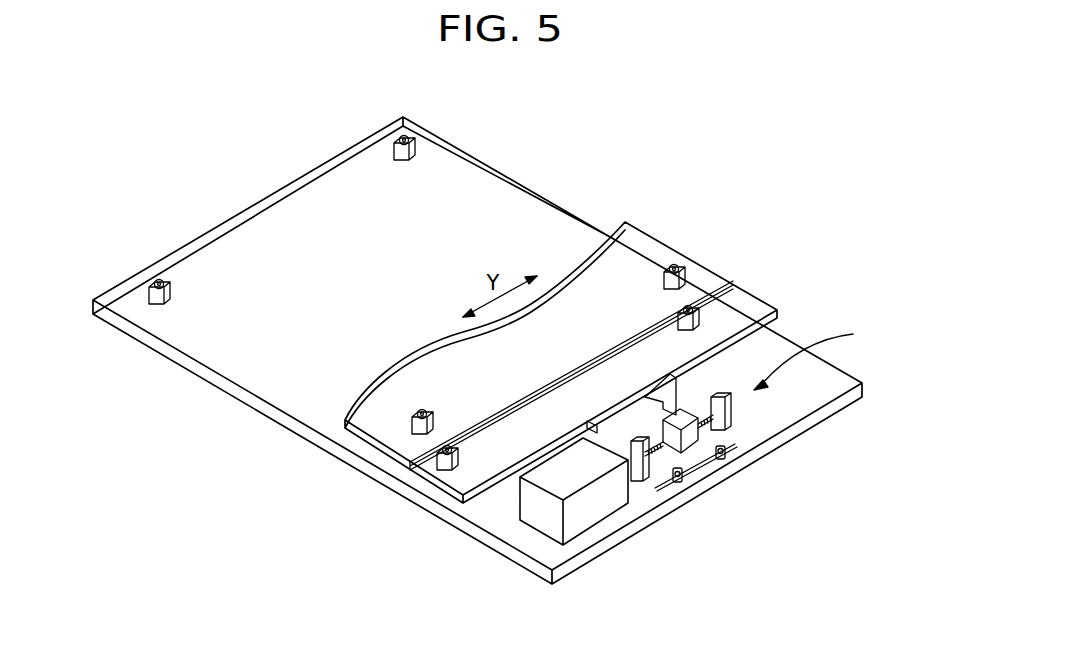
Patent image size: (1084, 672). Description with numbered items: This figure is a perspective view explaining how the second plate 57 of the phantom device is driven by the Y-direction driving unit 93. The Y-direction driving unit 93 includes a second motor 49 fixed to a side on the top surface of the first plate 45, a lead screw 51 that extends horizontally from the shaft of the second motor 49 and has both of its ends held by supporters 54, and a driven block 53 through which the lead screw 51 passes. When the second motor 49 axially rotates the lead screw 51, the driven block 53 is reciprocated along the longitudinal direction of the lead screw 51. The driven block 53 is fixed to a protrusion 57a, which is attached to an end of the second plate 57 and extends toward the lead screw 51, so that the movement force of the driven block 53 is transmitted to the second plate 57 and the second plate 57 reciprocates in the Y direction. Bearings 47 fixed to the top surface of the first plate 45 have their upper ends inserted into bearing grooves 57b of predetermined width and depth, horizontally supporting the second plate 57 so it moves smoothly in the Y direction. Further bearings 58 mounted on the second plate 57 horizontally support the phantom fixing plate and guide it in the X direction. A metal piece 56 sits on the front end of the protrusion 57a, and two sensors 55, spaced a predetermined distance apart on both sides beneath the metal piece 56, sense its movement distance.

The first plate 45 is at (172, 360).
The bearings 47 is at (160, 282).
The second motor 49 is at (610, 515).
The lead screw 51 is at (705, 420).
The driven block 53 is at (679, 416).
The supporters 54 is at (733, 420).
The sensors 55 is at (725, 458).
The metal piece 56 is at (690, 472).
The second plate 57 is at (638, 252).
The protrusion 57a is at (630, 408).
The bearing grooves 57b is at (410, 463).
The bearings 58 is at (680, 268).
The Y-direction driving unit 93 is at (818, 356).